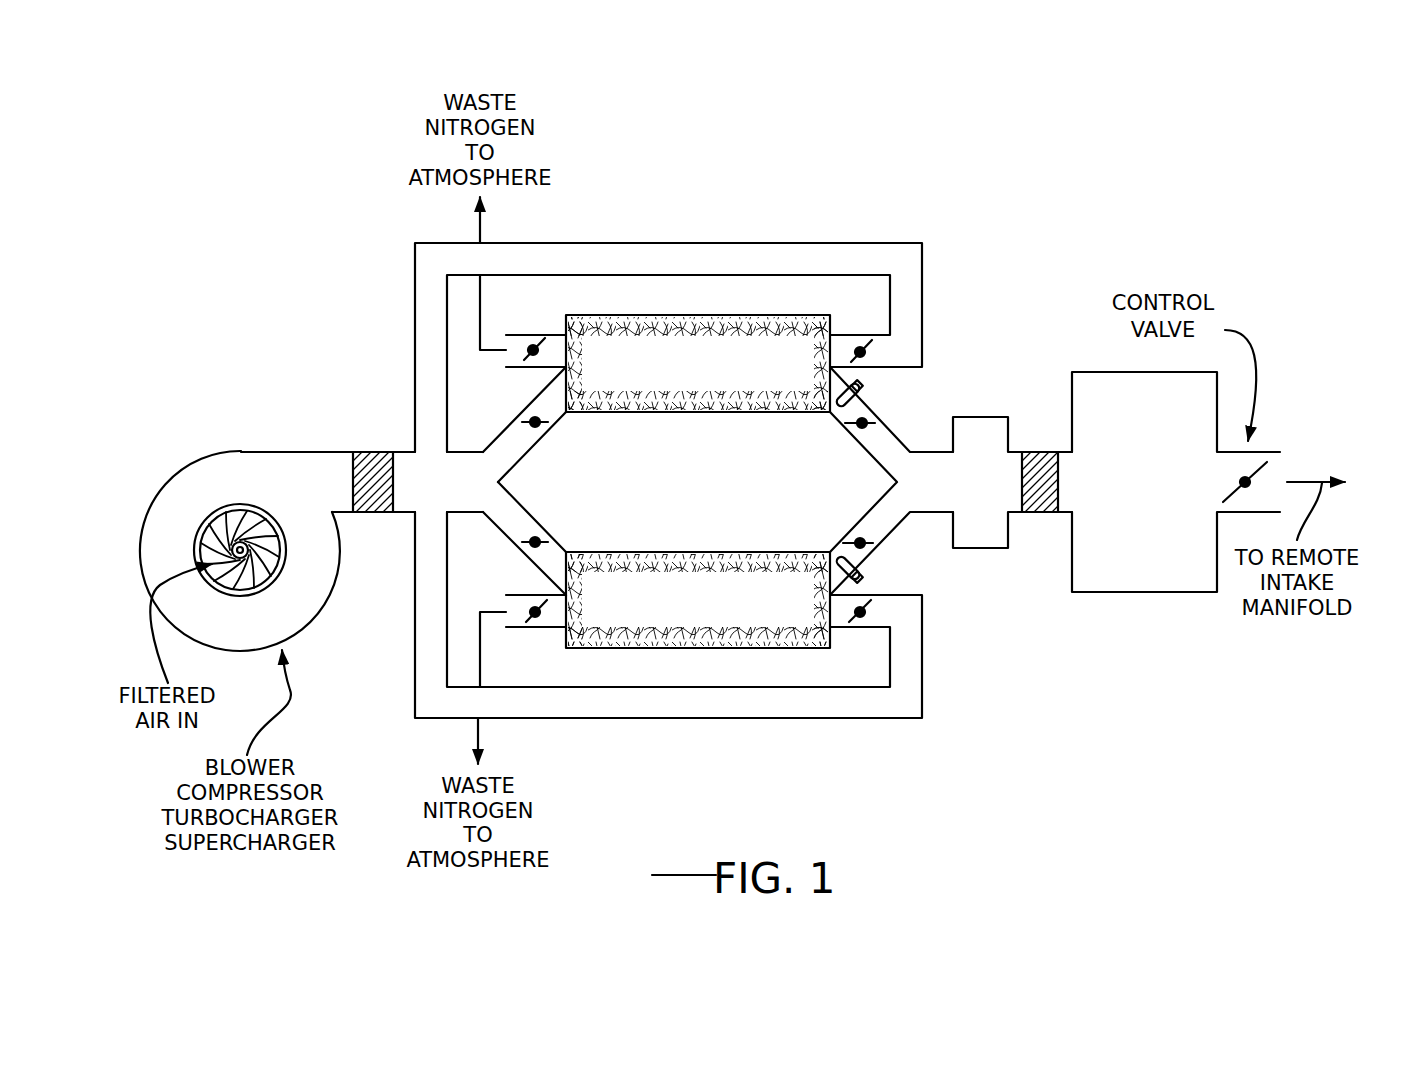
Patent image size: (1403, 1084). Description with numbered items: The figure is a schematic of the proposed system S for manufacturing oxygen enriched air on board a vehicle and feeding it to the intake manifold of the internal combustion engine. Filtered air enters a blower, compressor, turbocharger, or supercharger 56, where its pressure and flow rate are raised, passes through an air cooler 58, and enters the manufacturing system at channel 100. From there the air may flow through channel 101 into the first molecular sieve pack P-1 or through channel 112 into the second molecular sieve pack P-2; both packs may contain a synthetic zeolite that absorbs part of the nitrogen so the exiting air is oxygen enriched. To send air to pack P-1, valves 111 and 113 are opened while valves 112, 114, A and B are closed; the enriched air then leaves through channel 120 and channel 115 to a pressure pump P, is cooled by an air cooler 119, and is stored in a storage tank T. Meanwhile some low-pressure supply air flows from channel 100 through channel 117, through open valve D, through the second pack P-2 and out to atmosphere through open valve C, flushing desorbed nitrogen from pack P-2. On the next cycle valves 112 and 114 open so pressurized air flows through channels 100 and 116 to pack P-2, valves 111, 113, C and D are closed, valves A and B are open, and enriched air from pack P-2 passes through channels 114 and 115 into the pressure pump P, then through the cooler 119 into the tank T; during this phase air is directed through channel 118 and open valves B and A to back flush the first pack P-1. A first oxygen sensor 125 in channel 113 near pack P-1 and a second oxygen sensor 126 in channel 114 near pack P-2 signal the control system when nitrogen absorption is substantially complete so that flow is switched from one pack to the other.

The blower, compressor, turbocharger, or supercharger 56 is at (251, 631).
The air cooler 58 is at (325, 431).
The channel 100 is at (448, 495).
The channel 101 is at (565, 414).
The valve 111 is at (535, 428).
The channel/valve 112 is at (528, 555).
The valve/channel 113 is at (840, 425).
The valve/channel 114 is at (873, 550).
The channel 115 is at (951, 495).
The channel 116 is at (512, 518).
The channel 117 is at (678, 703).
The channel 118 is at (637, 260).
The air cooler 119 is at (1037, 524).
The channel 120 is at (888, 448).
The first oxygen sensor 125 is at (862, 386).
The second oxygen sensor 126 is at (863, 577).
The system S is at (753, 238).
The pressure pump P is at (1018, 434).
The storage tank T is at (1131, 409).
The valve A is at (531, 345).
The valve B is at (866, 345).
The valve C is at (528, 622).
The valve D is at (864, 622).
The first molecular sieve pack P-1 is at (680, 413).
The second molecular sieve pack P-2 is at (640, 552).